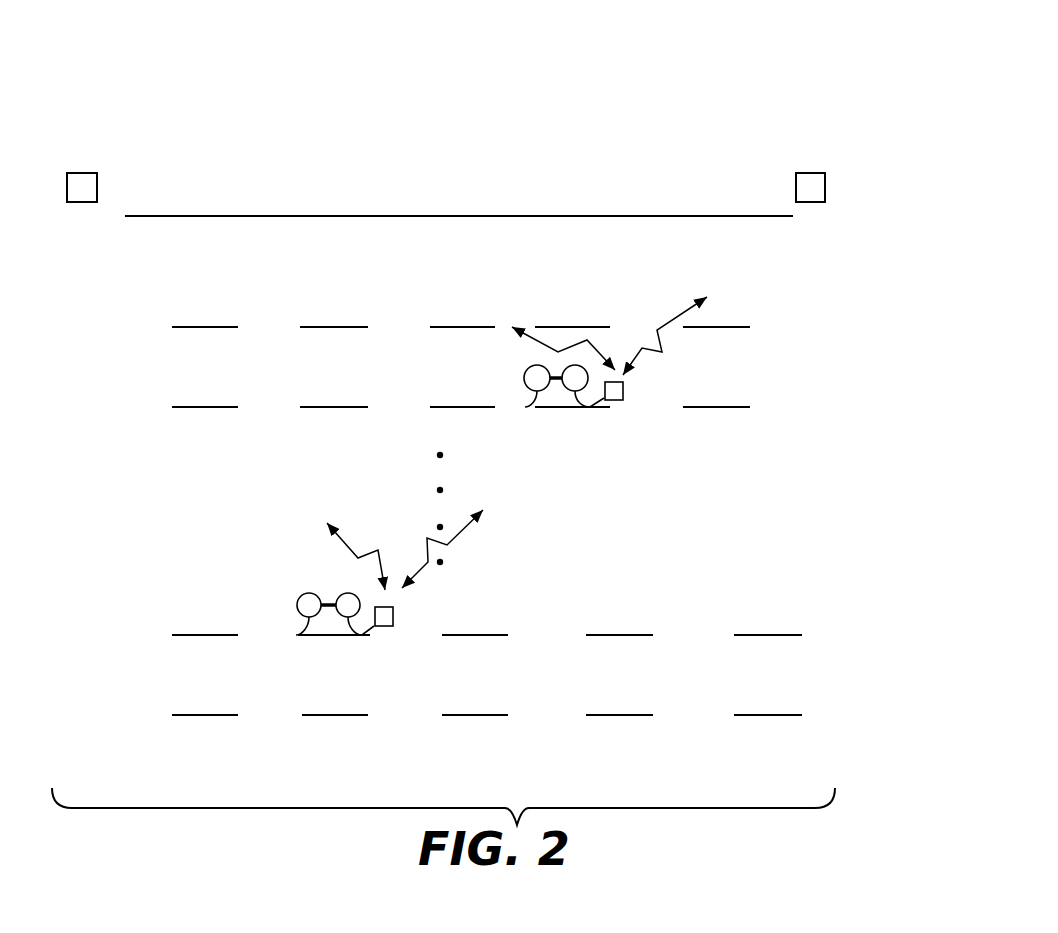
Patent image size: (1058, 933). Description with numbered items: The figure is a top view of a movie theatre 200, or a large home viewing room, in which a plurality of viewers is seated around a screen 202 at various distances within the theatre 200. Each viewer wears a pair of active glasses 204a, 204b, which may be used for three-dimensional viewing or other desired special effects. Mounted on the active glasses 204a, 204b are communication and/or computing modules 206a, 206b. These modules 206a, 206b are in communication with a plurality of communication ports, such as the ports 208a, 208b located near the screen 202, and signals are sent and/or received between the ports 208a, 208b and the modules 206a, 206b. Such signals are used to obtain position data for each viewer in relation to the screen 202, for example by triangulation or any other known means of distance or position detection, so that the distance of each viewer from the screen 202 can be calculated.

The movie theatre 200 is at (589, 90).
The screen 202 is at (333, 215).
The active glasses 204a is at (513, 398).
The communication and/or computing module 206a is at (617, 400).
The active glasses 204b is at (285, 625).
The communication and/or computing module 206b is at (385, 626).
The communication port 208a is at (82, 202).
The communication port 208b is at (812, 202).